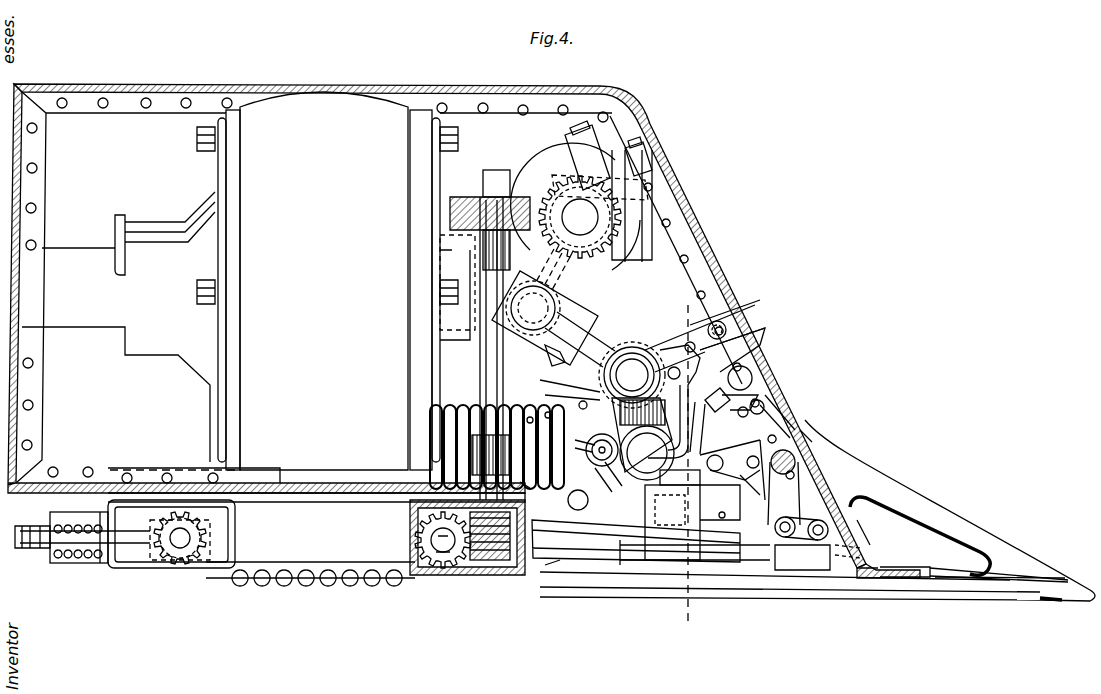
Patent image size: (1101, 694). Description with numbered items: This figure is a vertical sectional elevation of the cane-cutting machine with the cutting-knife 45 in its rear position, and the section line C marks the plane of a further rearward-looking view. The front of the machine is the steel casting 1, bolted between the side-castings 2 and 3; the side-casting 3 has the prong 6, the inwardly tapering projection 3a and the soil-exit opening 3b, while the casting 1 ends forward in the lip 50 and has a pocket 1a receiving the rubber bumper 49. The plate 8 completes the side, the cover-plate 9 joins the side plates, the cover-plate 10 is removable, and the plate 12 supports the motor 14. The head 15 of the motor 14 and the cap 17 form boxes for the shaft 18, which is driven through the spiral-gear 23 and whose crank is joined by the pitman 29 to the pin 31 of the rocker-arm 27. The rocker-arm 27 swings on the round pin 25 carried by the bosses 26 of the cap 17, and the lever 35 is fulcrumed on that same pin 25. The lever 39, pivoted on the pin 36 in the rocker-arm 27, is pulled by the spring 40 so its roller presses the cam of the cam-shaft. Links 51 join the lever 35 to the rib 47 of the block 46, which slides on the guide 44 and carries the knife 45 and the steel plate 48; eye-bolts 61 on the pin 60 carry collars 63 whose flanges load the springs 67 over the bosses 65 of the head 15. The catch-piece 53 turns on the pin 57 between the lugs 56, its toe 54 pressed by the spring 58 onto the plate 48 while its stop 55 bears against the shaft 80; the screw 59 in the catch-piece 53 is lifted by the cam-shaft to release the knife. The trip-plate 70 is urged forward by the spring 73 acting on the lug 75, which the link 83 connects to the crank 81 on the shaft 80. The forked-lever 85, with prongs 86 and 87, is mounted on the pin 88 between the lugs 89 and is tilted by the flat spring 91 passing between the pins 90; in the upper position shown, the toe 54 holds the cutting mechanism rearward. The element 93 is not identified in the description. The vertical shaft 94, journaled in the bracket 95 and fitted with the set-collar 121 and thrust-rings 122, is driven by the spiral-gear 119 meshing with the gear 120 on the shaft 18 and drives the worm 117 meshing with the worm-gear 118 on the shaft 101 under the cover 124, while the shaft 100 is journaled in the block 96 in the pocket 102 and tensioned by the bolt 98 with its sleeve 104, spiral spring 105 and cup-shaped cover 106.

The steel casting 1 is at (736, 322).
The pocket 1a is at (847, 546).
The side-casting 2 is at (302, 500).
The side-casting 3 is at (848, 474).
The projection 3a is at (1010, 578).
The opening 3b is at (905, 555).
The prong 6 is at (1075, 598).
The plate 8 is at (314, 287).
The cover-plate 9 is at (200, 86).
The cover-plate 10 is at (684, 202).
The plate 12 is at (48, 486).
The motor 14 is at (259, 281).
The head 15 is at (428, 183).
The cap 17 is at (638, 218).
The shaft 18 is at (580, 217).
The spiral-gear 23 is at (690, 486).
The round pin 25 is at (632, 375).
The bosses 26 is at (648, 352).
The rocker-arm 27 is at (579, 373).
The pitman 29 is at (640, 178).
The pin 31 is at (545, 318).
The lever 35 is at (580, 413).
The pin 36 is at (688, 348).
The lever 39 is at (680, 401).
The spring 40 is at (692, 428).
The guide 44 is at (695, 556).
The cutting-knife 45 is at (596, 565).
The block 46 is at (545, 565).
The rib 47 is at (643, 445).
The steel plate 48 is at (665, 522).
The rubber bumper 49 is at (784, 545).
The lip 50 is at (952, 576).
The links 51 is at (596, 487).
The catch-piece 53 is at (730, 454).
The toe 54 is at (720, 503).
The stop 55 is at (726, 526).
The lugs 56 is at (758, 475).
The pin 57 is at (735, 494).
The spring 58 is at (797, 425).
The screw 59 is at (720, 398).
The pin 60 is at (602, 450).
The eye-bolt 61 is at (581, 438).
The collar 63 is at (557, 401).
The boss 65 is at (455, 405).
The spring 67 is at (539, 403).
The trip-plate 70 is at (978, 590).
The spring 73 is at (840, 497).
The lug 75 is at (866, 556).
The shaft 80 is at (815, 448).
The crank 81 is at (799, 543).
The link 83 is at (784, 487).
The forked-lever 85 is at (720, 341).
The upper prong 86 is at (640, 392).
The lower prong 87 is at (704, 463).
The pin 88 is at (754, 376).
The lugs 89 is at (746, 345).
The pins 90 is at (764, 403).
The flat spring 91 is at (770, 408).
The rod 93 is at (748, 499).
The vertical shaft 94 is at (482, 362).
The bracket 95 is at (452, 255).
The block 96 is at (155, 546).
The bolt 98 is at (28, 547).
The shaft 100 is at (180, 548).
The shaft 101 is at (445, 565).
The pocket 102 is at (171, 534).
The sleeve 104 is at (65, 562).
The spiral spring 105 is at (82, 563).
The cup shaped cover 106 is at (100, 563).
The worm 117 is at (490, 560).
The worm-gear 118 is at (418, 576).
The spiral-gear 119 is at (465, 188).
The gear 120 is at (616, 224).
The set-collar 121 is at (506, 435).
The thrust-rings 122 is at (540, 492).
The cover 124 is at (470, 562).
The section line C— C is at (652, 468).